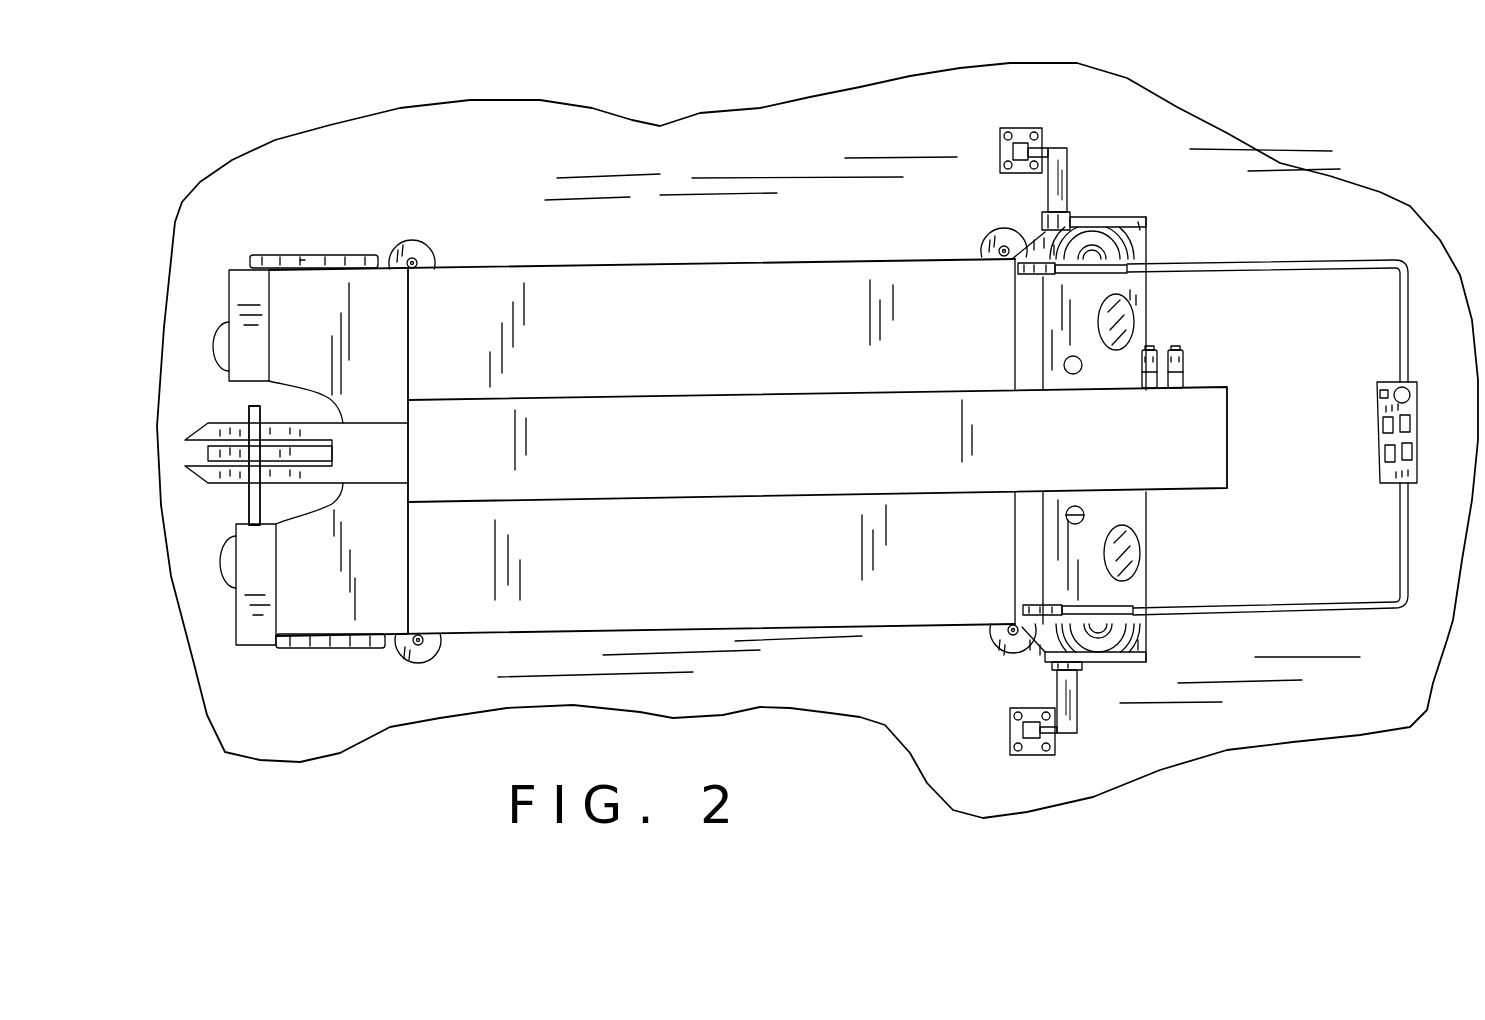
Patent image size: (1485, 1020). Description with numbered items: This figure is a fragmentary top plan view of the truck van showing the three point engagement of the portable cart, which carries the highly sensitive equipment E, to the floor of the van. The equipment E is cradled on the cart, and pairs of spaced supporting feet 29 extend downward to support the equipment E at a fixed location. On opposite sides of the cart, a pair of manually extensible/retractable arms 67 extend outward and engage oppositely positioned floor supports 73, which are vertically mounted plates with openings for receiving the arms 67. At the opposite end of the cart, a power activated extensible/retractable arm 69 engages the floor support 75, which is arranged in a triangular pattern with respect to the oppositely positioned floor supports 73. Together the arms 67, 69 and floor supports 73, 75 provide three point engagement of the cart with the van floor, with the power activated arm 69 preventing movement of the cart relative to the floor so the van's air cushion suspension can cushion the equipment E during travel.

The highly sensitive equipment E is at (809, 340).
The supporting feet 29 is at (416, 250).
The manually extensible/retractable arms 67 is at (1070, 170).
The power activated extensible/retractable arm 69 is at (253, 500).
The floor supports 73 is at (1016, 145).
The floor support 75 is at (231, 452).